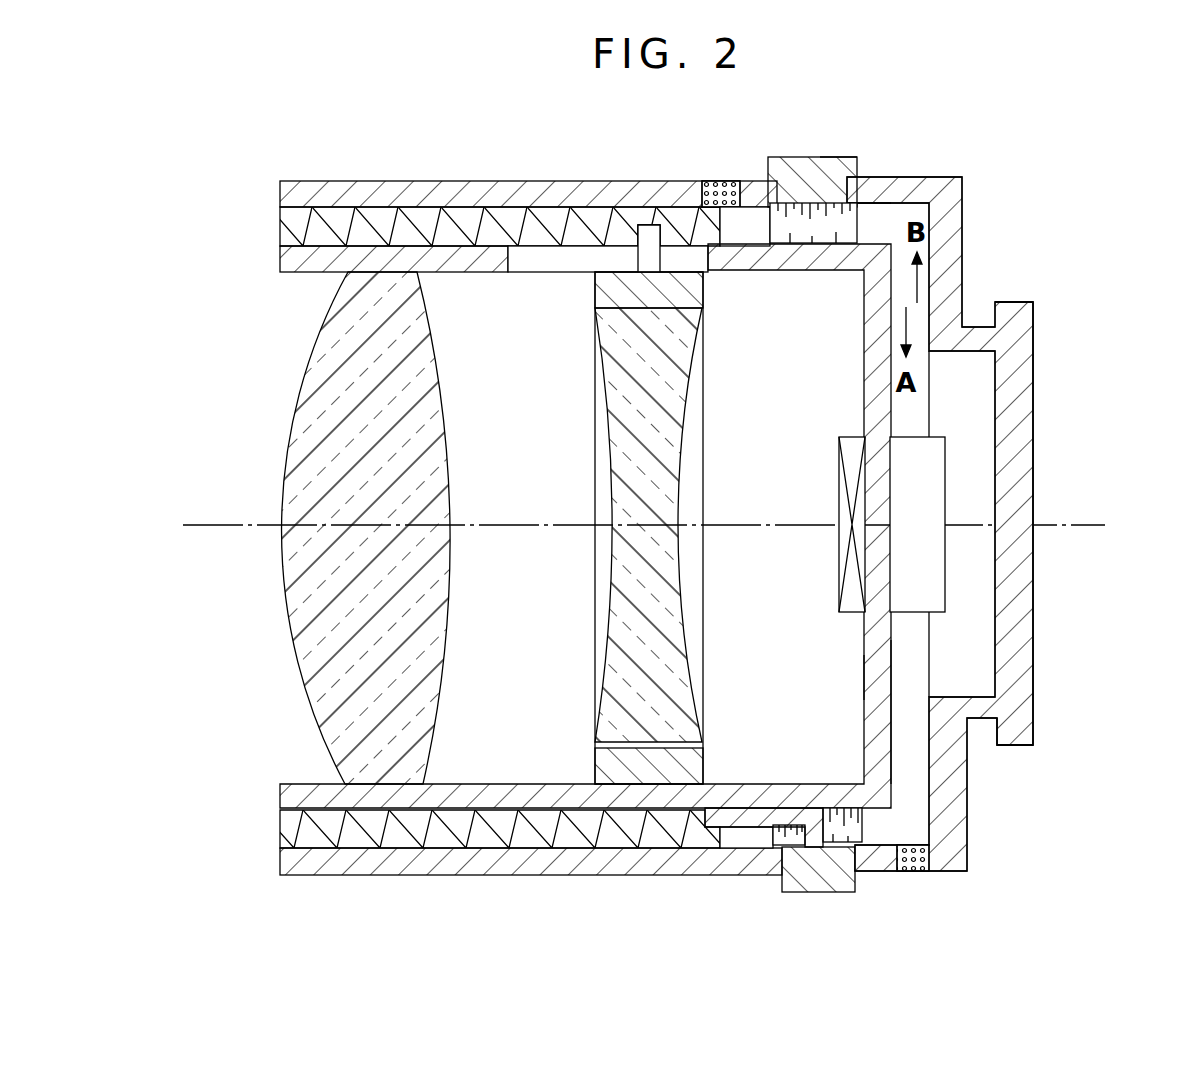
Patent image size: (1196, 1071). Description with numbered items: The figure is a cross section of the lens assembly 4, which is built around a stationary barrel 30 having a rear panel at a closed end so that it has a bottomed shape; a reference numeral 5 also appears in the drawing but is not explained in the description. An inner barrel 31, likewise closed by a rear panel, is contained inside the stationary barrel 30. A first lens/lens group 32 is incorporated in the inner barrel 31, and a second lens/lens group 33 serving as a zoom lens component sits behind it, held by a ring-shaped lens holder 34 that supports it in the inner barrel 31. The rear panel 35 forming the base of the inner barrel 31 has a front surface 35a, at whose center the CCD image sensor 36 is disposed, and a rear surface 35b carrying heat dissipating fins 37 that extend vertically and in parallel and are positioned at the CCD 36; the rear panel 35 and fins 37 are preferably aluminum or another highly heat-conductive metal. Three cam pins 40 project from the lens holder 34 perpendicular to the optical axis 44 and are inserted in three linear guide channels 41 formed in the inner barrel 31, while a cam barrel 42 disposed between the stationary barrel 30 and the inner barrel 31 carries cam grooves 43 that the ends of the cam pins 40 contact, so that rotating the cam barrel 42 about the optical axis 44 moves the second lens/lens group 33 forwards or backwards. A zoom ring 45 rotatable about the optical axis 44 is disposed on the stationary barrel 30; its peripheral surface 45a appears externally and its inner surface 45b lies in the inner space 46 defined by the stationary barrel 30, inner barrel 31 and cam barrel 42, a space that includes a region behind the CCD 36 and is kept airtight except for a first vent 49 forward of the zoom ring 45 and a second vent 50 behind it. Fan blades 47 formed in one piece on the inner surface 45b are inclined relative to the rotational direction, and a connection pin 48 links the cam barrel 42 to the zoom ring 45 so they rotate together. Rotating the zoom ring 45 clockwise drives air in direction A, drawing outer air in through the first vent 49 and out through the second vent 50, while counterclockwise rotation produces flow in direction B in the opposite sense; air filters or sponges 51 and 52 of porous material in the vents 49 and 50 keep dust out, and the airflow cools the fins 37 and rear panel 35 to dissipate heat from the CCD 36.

The lens assembly 4 is at (1098, 295).
The image pickup element 5 is at (1020, 746).
The stationary barrel 30 is at (980, 203).
The inner barrel 31 is at (272, 260).
The first lens/lens group 32 is at (296, 598).
The second lens/lens group 33 is at (606, 618).
The lens holder 34 is at (600, 765).
The rear panel 35 is at (878, 636).
The front surface 35a is at (877, 678).
The rear surface 35b is at (900, 677).
The CCD image sensor 36 is at (845, 500).
The heat dissipating fins 37 is at (937, 563).
The cam pins 40 is at (650, 235).
The linear guide channels 41 is at (518, 274).
The cam barrel 42 is at (272, 225).
The cam grooves 43 is at (640, 228).
The optical axis 44 is at (213, 520).
The zoom ring 45 is at (803, 157).
The peripheral surface 45a is at (840, 157).
The inner surface 45b is at (862, 232).
The inner space 46 is at (962, 407).
The fan blades 47 is at (812, 243).
The connection pin 48 is at (750, 818).
The first vent 49 is at (716, 200).
The second vent 50 is at (922, 871).
The air filter or sponge 51 is at (732, 185).
The air filter or sponge 52 is at (915, 872).